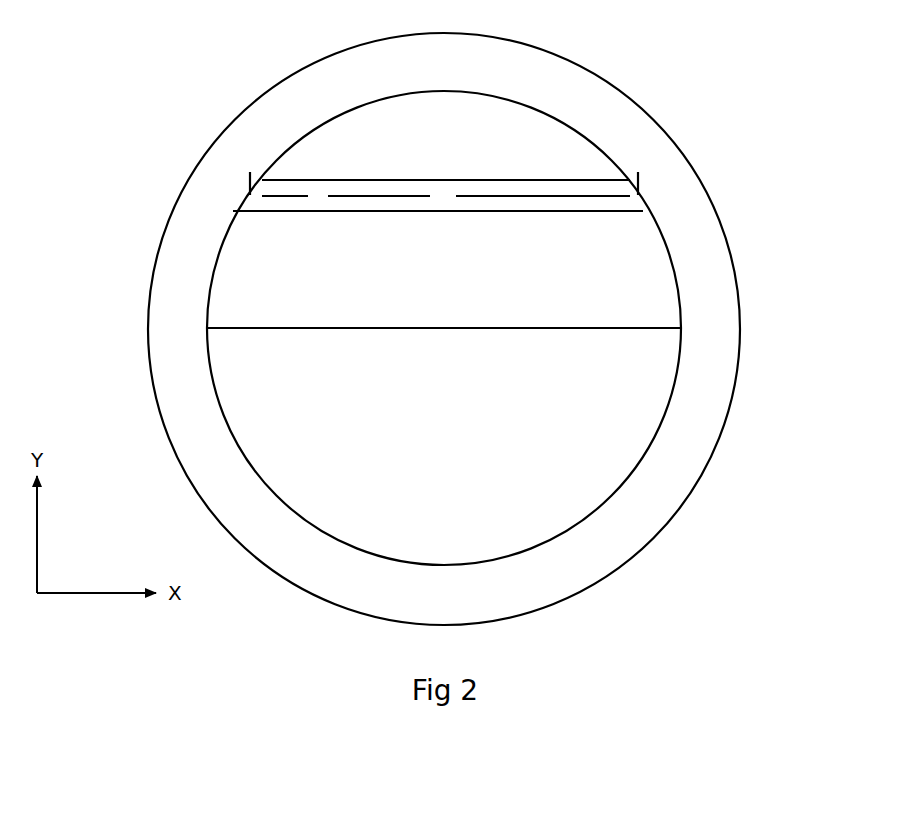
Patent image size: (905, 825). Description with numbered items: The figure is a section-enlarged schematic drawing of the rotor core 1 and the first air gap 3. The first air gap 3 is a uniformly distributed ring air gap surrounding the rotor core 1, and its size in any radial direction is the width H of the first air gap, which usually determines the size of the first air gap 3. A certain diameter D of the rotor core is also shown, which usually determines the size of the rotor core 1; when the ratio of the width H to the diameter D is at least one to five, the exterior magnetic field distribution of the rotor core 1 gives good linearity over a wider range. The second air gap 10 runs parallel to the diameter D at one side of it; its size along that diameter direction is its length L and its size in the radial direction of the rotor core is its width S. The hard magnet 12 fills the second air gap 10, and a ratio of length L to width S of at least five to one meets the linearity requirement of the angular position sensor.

The rotor core 1 is at (667, 223).
The first air gap 3 is at (712, 271).
The second air gap 10 is at (469, 114).
The hard magnet 12 is at (491, 138).
The diameter of the rotor core D is at (510, 363).
The width of the second air gap S is at (317, 155).
The length of the second air gap L is at (443, 196).
The width of the first air gap H is at (473, 33).